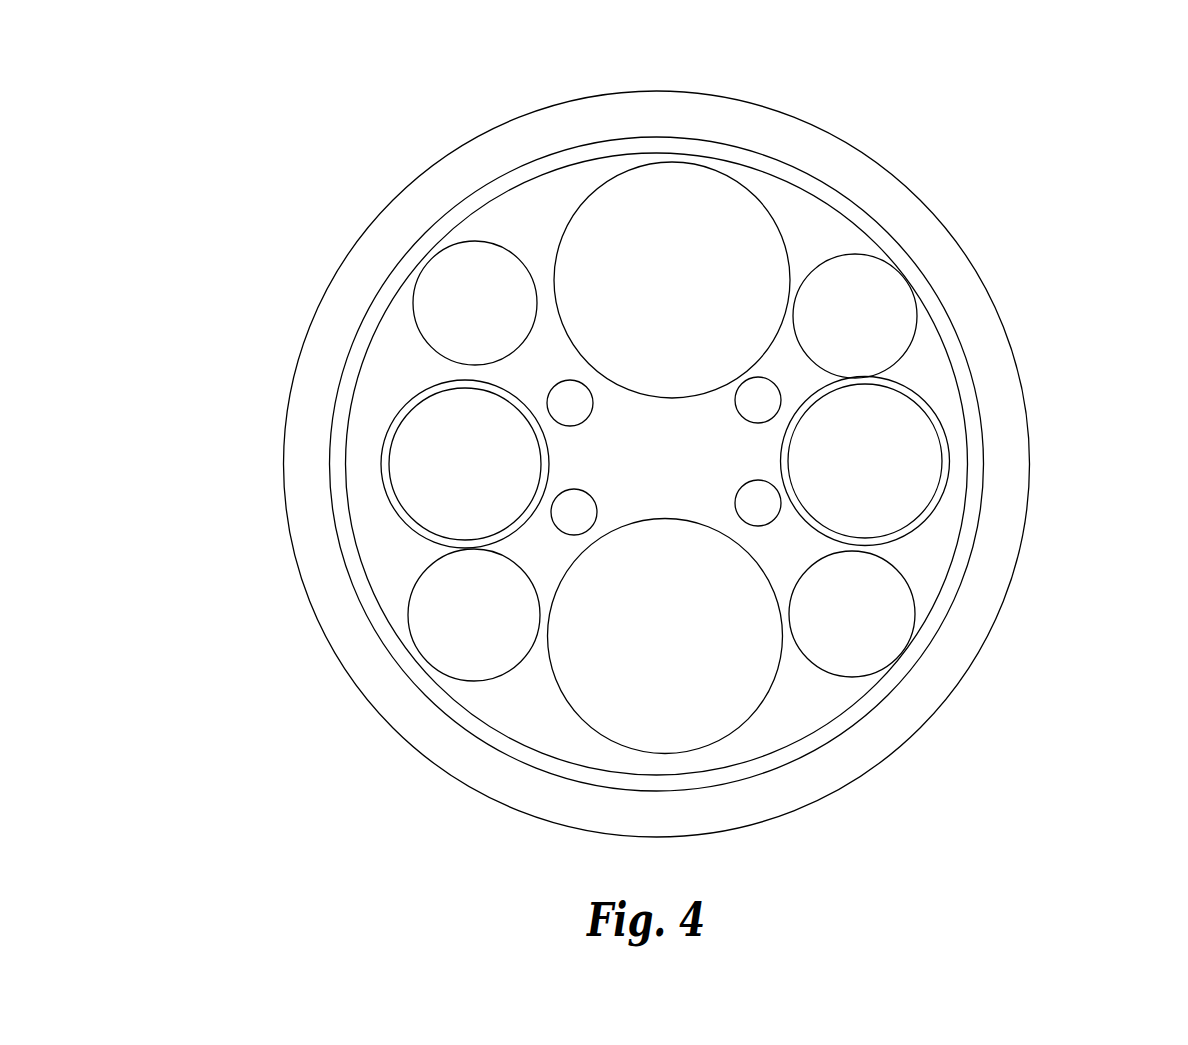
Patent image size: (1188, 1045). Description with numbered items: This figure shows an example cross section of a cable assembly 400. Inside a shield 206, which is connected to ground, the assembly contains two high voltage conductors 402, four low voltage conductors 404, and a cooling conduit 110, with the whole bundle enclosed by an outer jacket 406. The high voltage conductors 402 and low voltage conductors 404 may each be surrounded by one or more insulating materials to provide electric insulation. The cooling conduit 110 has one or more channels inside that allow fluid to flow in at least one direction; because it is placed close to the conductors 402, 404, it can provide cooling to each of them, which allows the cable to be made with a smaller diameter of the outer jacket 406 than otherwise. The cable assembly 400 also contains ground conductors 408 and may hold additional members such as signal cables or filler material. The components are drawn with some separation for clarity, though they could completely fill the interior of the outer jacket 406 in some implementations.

The cable assembly 400 is at (1037, 82).
The high voltage conductors 402 is at (698, 222).
The low voltage conductors 404 is at (437, 297).
The outer jacket 406 is at (963, 672).
The ground conductors 408 is at (547, 403).
The cooling conduit 110 is at (432, 465).
The shield 206 is at (848, 730).